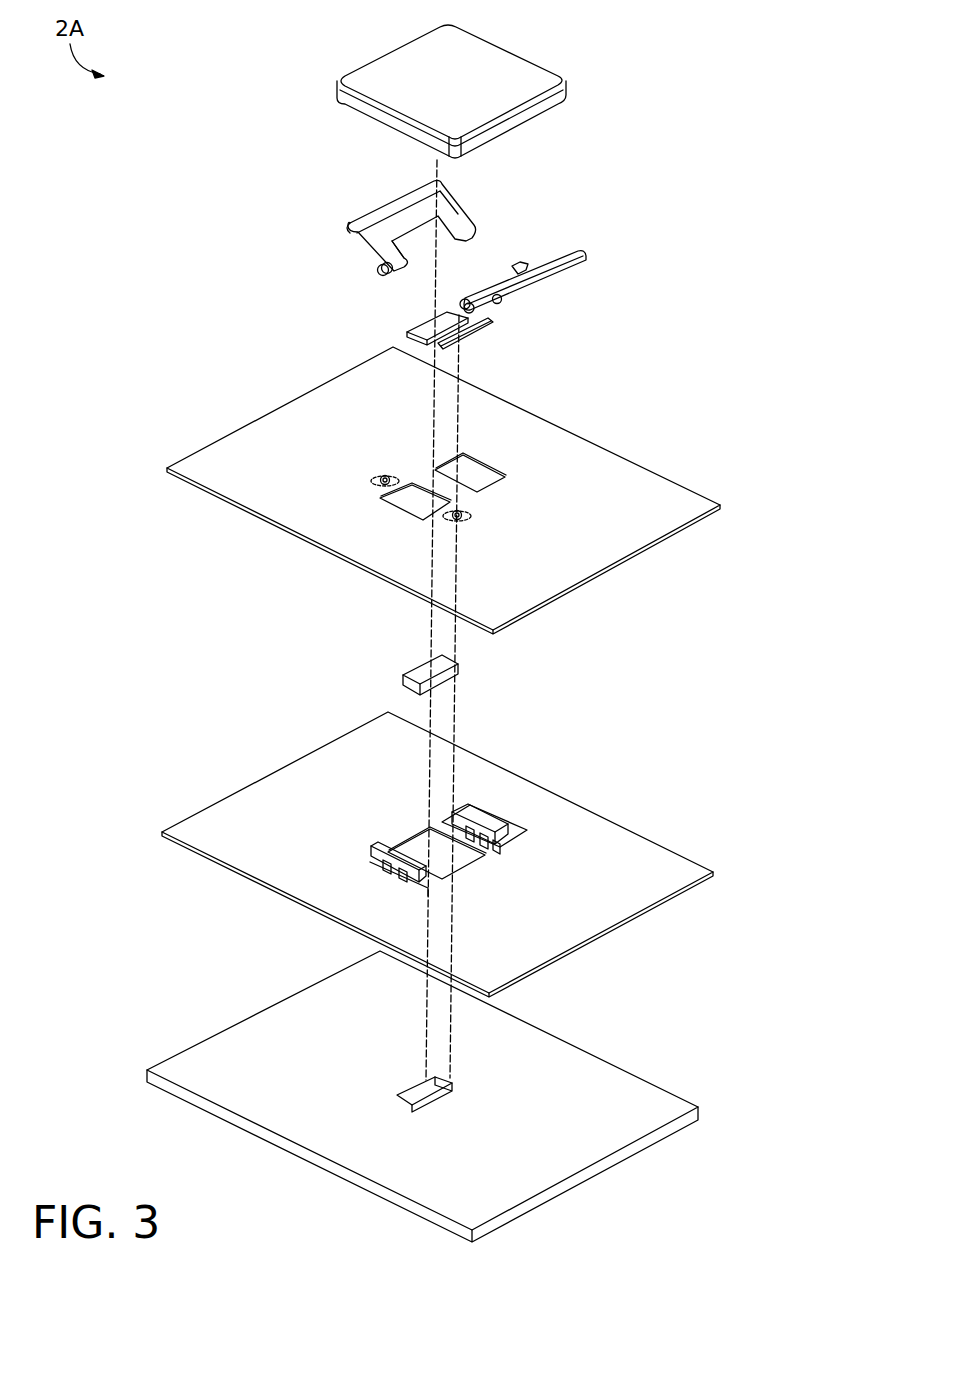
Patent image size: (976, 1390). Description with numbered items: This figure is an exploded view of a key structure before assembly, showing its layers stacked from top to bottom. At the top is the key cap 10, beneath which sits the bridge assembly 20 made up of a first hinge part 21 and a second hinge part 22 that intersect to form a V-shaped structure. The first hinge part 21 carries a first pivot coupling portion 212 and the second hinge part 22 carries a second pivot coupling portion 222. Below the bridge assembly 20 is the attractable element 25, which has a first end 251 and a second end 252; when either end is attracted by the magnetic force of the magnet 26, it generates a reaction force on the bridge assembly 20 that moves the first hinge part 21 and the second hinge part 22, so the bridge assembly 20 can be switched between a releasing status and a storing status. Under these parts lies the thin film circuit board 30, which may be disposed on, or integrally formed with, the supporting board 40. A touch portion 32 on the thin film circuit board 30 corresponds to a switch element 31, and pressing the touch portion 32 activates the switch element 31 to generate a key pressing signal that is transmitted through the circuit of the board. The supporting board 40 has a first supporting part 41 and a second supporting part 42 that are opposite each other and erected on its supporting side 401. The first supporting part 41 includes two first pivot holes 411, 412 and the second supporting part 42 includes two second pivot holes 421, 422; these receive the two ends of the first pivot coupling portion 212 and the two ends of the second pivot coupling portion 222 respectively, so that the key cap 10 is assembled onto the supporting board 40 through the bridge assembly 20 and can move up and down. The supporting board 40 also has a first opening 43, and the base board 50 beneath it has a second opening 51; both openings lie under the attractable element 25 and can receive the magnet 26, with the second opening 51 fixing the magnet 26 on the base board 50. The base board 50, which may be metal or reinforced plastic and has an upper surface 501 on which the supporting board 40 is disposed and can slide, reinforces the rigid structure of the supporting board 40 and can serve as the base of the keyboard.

The key cap 10 is at (490, 66).
The bridge assembly 20 is at (597, 242).
The first hinge part 21 is at (372, 212).
The first pivot coupling portion 212 is at (378, 272).
The second hinge part 22 is at (538, 290).
The second pivot coupling portion 222 is at (460, 307).
The attractable element 25 is at (460, 338).
The first end 251 is at (425, 328).
The second end 252 is at (486, 329).
The magnet 26 is at (441, 680).
The thin film circuit board 30 is at (443, 496).
The switch element 31 is at (382, 494).
The touch portion 32 is at (406, 548).
The supporting board 40 is at (437, 853).
The supporting side 401 is at (580, 904).
The first supporting part 41 is at (321, 899).
The first pivot hole 411 is at (388, 878).
The first pivot hole 412 is at (404, 884).
The second supporting part 42 is at (517, 782).
The second pivot hole 421 is at (464, 808).
The second pivot hole 422 is at (488, 814).
The first opening 43 is at (470, 870).
The base board 50 is at (422, 1096).
The upper surface of base plate 501 is at (636, 1098).
The second opening 51 is at (428, 1080).